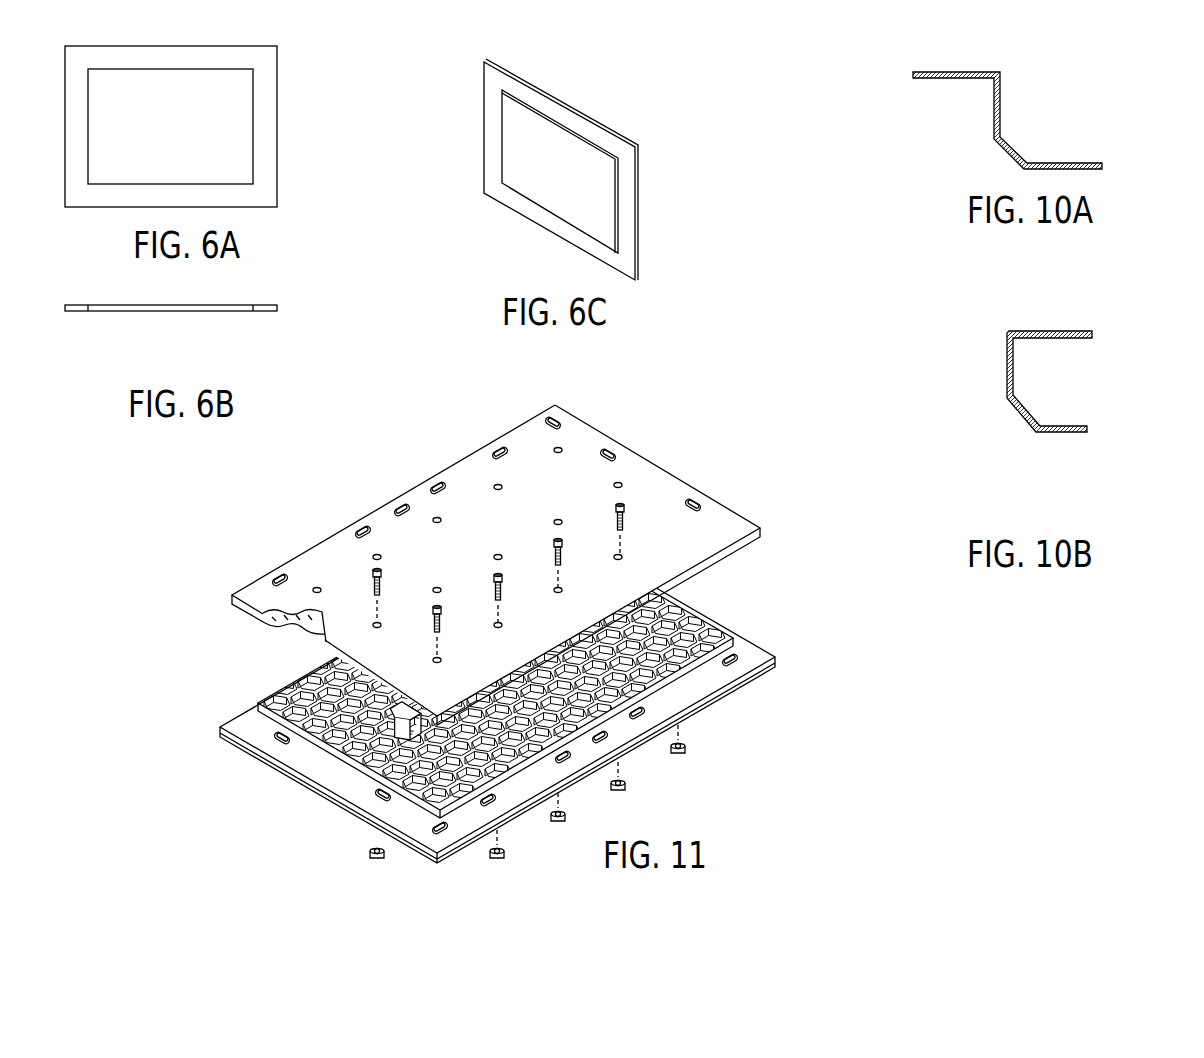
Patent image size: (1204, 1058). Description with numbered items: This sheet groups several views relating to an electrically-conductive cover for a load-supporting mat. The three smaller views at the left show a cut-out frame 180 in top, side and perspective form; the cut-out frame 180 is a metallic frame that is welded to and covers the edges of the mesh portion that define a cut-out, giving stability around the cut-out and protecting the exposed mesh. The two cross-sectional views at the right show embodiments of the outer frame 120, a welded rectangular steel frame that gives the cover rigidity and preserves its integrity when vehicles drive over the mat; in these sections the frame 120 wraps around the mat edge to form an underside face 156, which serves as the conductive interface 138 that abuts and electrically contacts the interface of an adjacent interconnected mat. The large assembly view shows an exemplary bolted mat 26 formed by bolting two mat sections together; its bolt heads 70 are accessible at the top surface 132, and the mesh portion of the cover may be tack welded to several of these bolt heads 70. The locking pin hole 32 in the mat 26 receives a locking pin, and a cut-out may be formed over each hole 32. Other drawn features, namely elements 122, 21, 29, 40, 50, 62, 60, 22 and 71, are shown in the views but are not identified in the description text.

In FIG. 6A, the cut-out frame 180 is at (283, 124).
In FIG. 6B, the cut-out frame 180 is at (213, 322).
In FIG. 6C, the cut-out frame 180 is at (525, 71).
In FIG. 10A, the outer frame 120 is at (993, 96).
In FIG. 10B, the outer frame 120 is at (993, 383).
In FIG. 10A, the upper flange 122 is at (1011, 96).
In FIG. 10B, the upper flange 122 is at (1045, 383).
In FIG. 10A, the conductive interface 138 is at (1034, 112).
In FIG. 10B, the conductive interface 138 is at (1047, 406).
In FIG. 10A, the underside face 156 is at (1075, 163).
In FIG. 10B, the underside face 156 is at (1063, 433).
In FIG. 11, the mat 26 is at (475, 538).
In FIG. 11, the top surface 132 is at (475, 538).
In FIG. 11, the top plate 21 is at (475, 556).
In FIG. 11, the locking pin hole 32 is at (398, 506).
In FIG. 11, the bolt heads 70 is at (374, 571).
In FIG. 11, the hole 29 is at (373, 625).
In FIG. 11, the plate body 40 is at (270, 619).
In FIG. 11, the slot 50 is at (280, 741).
In FIG. 11, the honeycomb cell 62 is at (352, 760).
In FIG. 11, the honeycomb core 60 is at (478, 677).
In FIG. 11, the base plate 22 is at (480, 697).
In FIG. 11, the nut 71 is at (369, 855).